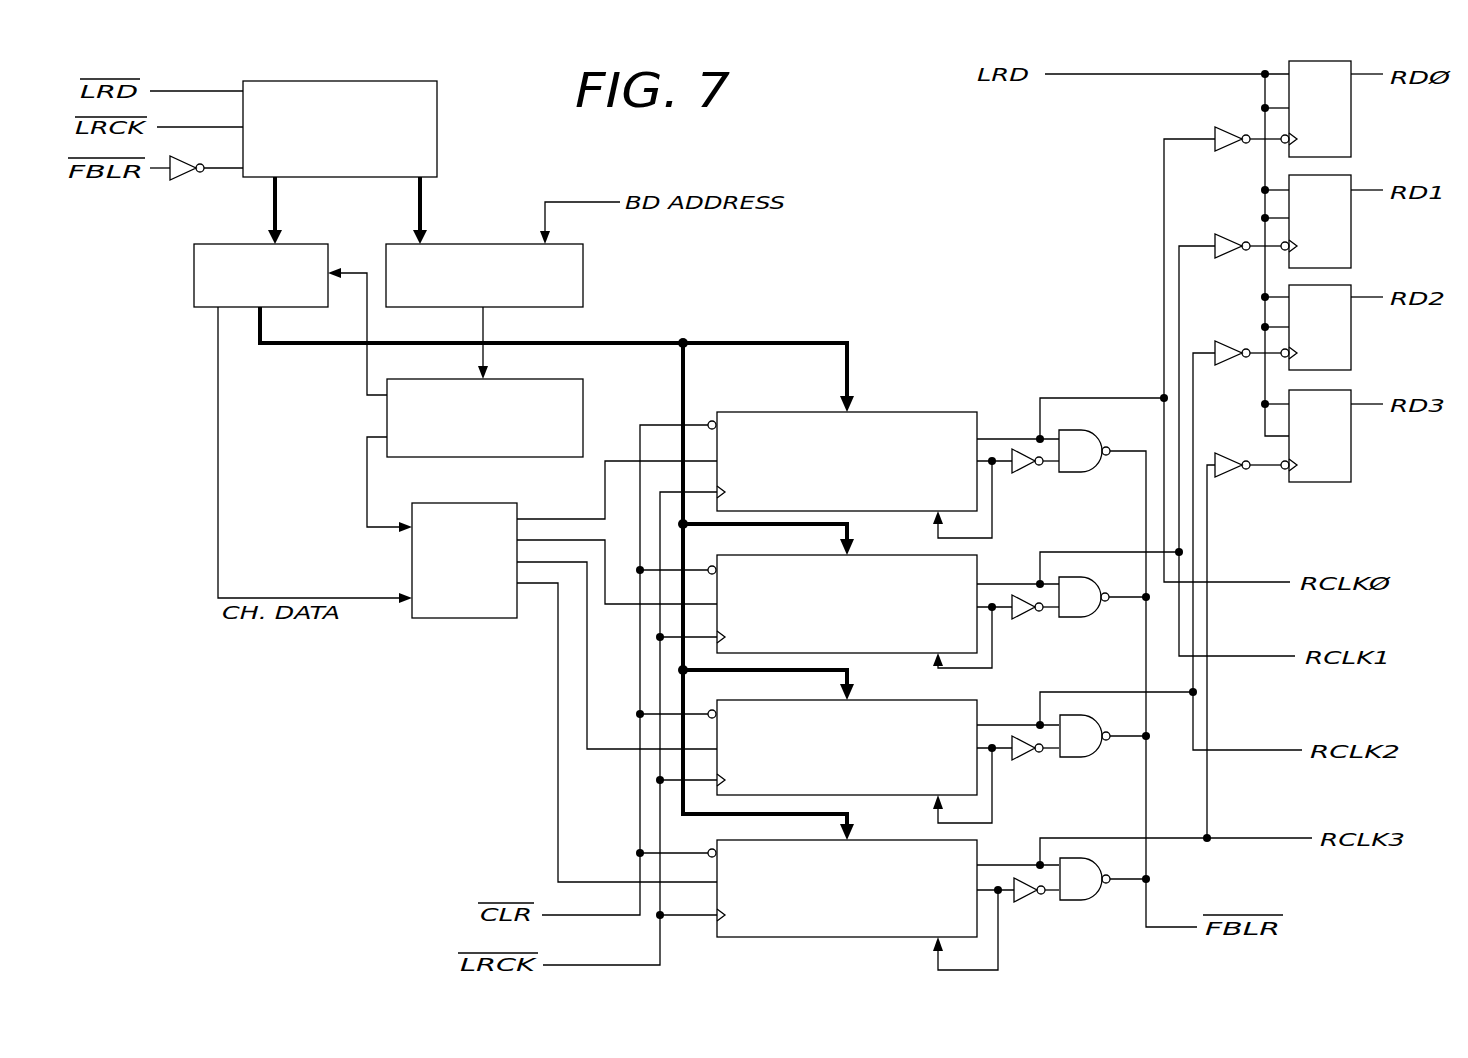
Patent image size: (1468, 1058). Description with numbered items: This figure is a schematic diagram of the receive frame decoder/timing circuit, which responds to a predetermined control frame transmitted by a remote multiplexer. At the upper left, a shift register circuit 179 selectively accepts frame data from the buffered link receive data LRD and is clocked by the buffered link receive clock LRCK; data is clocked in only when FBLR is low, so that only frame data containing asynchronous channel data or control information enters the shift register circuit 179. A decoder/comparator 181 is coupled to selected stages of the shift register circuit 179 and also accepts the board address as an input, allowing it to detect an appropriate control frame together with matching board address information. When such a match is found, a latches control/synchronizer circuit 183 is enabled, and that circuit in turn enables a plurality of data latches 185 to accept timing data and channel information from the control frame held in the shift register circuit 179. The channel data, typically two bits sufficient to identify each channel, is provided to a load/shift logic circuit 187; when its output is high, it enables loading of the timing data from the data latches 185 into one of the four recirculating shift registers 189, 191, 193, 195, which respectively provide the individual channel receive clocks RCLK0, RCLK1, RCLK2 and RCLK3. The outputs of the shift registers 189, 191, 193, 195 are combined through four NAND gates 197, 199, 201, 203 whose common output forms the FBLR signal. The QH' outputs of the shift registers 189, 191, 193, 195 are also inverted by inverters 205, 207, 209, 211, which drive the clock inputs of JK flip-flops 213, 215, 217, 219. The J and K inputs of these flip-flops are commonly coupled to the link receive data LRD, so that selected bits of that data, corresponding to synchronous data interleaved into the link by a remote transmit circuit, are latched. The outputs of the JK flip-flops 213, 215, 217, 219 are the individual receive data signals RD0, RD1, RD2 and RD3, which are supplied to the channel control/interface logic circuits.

The shift register circuit 179 is at (425, 81).
The decoder/comparator 181 is at (586, 272).
The latches control/synchronizer circuit 183 is at (583, 392).
The data latches 185 is at (194, 285).
The load/shift logic circuit 187 is at (447, 618).
The shift register 189 is at (948, 412).
The shift register 191 is at (887, 555).
The shift register 193 is at (889, 705).
The shift register 195 is at (889, 840).
The NAND gate 197 is at (1085, 430).
The NAND gate 199 is at (1085, 577).
The NAND gate 201 is at (1109, 714).
The NAND gate 203 is at (1112, 857).
The inverter 205 is at (1228, 127).
The inverter 207 is at (1229, 234).
The inverter 209 is at (1232, 325).
The inverter 211 is at (1228, 473).
The JK flip-flop 213 is at (1352, 130).
The JK flip-flop 215 is at (1352, 240).
The JK flip-flop 217 is at (1352, 340).
The JK flip-flop 219 is at (1352, 450).